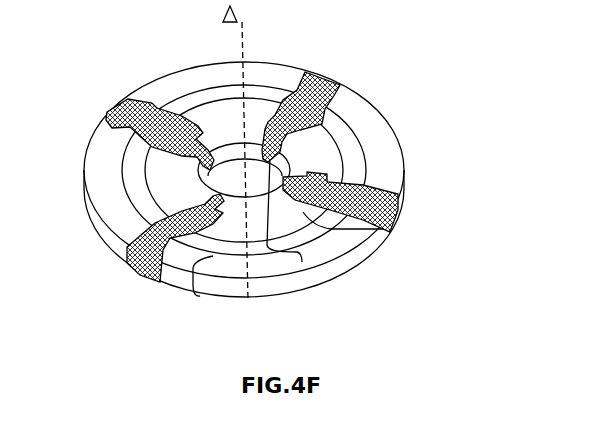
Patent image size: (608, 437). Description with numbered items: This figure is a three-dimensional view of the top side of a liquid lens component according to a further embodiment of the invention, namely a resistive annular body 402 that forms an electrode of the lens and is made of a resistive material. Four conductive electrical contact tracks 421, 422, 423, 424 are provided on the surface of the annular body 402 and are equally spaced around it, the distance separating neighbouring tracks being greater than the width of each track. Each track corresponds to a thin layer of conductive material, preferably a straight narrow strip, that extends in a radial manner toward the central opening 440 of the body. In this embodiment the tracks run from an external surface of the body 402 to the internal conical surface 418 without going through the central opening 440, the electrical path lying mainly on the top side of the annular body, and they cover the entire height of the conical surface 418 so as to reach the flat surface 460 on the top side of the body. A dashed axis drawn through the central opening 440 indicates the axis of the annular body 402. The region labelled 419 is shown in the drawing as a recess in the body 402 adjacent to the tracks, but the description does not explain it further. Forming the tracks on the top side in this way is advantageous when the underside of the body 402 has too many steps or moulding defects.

The resistive annular body 402 is at (150, 102).
The conical surface 418 is at (240, 182).
The slot 419 is at (302, 262).
The conductive electrical contact track 421 is at (342, 88).
The conductive electrical contact track 422 is at (125, 247).
The conductive electrical contact track 423 is at (388, 235).
The conductive electrical contact track 424 is at (80, 82).
The central opening 440 is at (226, 180).
The flat surface 460 is at (182, 175).